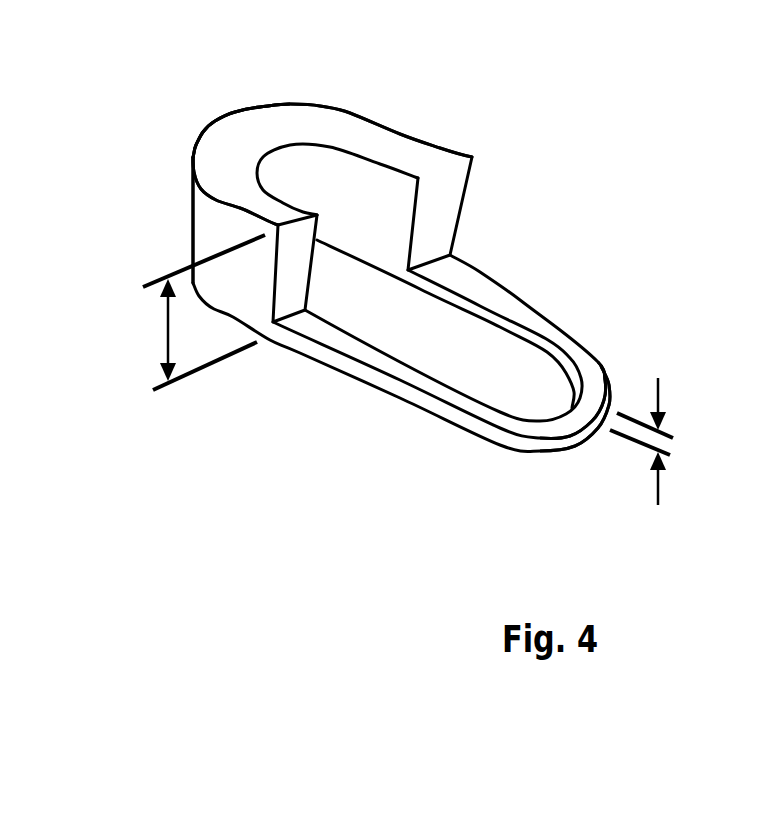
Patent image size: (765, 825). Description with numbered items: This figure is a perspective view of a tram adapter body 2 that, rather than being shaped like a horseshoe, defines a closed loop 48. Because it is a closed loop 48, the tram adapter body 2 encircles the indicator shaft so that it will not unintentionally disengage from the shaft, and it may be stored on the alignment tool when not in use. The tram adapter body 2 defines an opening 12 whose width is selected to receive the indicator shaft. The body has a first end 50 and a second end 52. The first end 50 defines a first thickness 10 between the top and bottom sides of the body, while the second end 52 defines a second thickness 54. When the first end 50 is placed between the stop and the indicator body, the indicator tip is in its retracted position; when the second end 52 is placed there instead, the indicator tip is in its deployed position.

The tram adapter body 2 is at (195, 186).
The first thickness 10 is at (163, 322).
The opening 12 is at (405, 327).
The closed loop 48 is at (317, 107).
The first end 50 is at (213, 128).
The second end 52 is at (592, 397).
The second thickness 54 is at (655, 490).